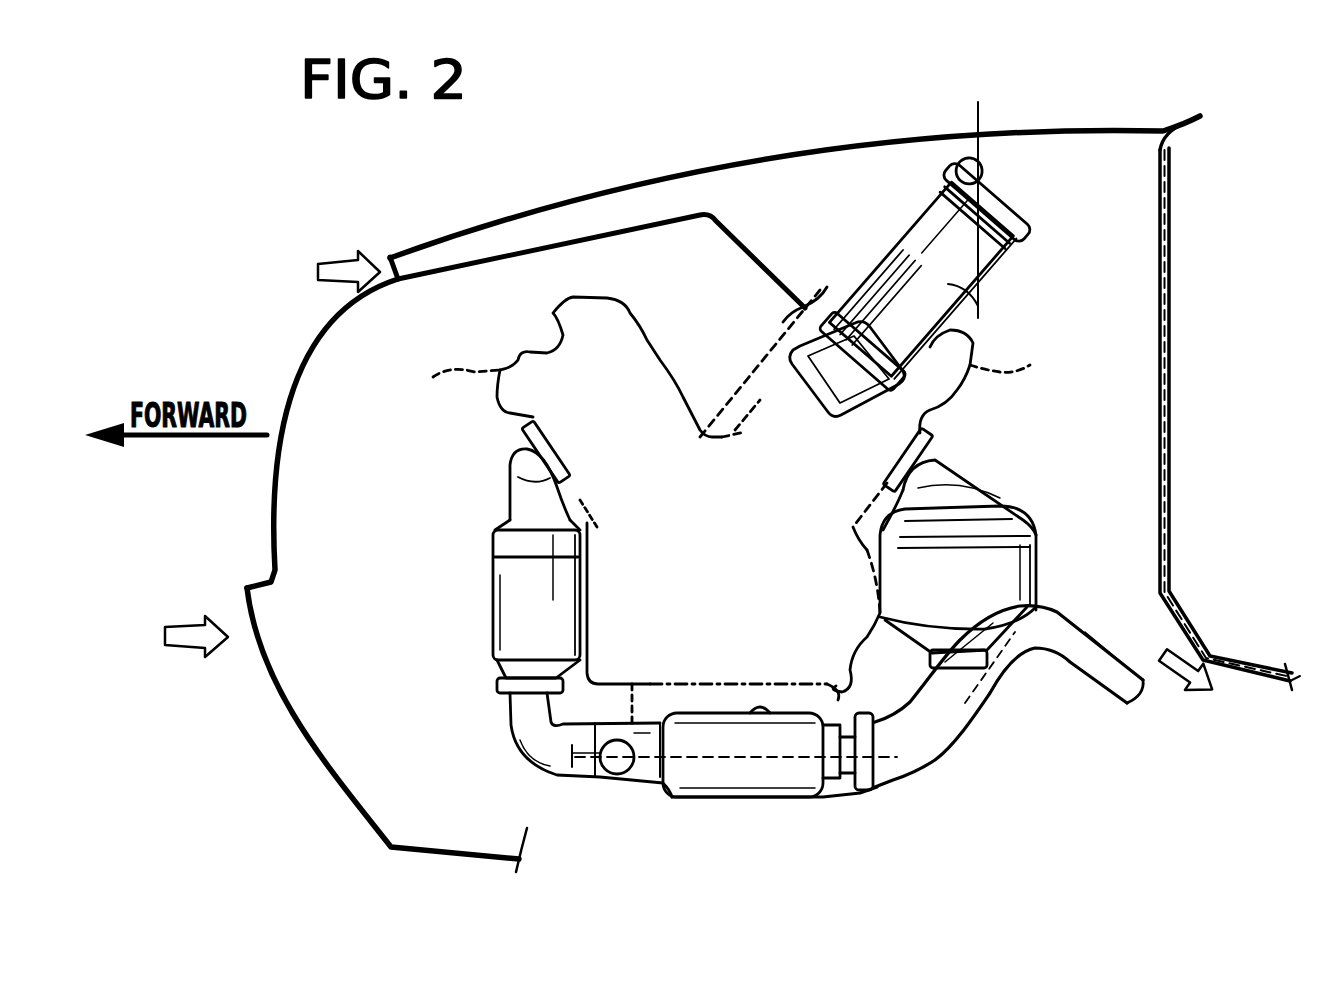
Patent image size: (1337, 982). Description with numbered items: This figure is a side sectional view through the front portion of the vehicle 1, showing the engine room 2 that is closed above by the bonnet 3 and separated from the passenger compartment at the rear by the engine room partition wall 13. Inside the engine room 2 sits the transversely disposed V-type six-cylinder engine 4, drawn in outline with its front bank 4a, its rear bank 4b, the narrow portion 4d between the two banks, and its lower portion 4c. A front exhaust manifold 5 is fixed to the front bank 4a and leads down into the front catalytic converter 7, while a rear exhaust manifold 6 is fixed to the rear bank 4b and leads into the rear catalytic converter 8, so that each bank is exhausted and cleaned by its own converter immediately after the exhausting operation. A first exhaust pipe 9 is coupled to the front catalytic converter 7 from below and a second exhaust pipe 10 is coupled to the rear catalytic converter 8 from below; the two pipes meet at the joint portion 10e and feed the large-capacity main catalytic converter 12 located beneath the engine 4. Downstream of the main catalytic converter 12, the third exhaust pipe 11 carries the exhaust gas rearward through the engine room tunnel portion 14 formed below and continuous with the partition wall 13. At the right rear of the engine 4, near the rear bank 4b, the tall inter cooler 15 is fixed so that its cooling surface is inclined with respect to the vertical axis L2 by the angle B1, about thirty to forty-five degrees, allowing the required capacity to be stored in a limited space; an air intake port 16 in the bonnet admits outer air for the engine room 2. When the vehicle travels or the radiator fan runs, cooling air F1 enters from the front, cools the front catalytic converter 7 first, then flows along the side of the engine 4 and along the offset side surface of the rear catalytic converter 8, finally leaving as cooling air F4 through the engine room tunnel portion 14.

The vehicle body 1 is at (311, 349).
The engine room 2 is at (480, 290).
The hood inner panel 3 is at (603, 230).
The V6 engine 4 is at (648, 342).
The front bank 4a is at (462, 359).
The rear bank 4b is at (1016, 355).
The engine lower portion 4c is at (836, 690).
The narrow portion 4d is at (734, 393).
The front exhaust manifold 5 is at (506, 500).
The rear exhaust manifold 6 is at (960, 486).
The front catalytic converter 7 is at (505, 612).
The rear catalytic converter 8 is at (1037, 570).
The first exhaust pipe 9 is at (533, 737).
The second exhaust pipe 10 is at (893, 790).
The joint portion 10e is at (626, 770).
The third exhaust pipe 11 is at (1052, 655).
The main catalytic converter 12 is at (769, 797).
The engine room partition wall 13 is at (1169, 380).
The engine room tunnel portion 14 is at (1265, 683).
The inter cooler 15 is at (902, 241).
The air intake port 16 is at (797, 192).
The axis extending along the vertical plane of the vehicle L2 is at (980, 120).
The angle B1 is at (985, 300).
The cooling air F1 is at (205, 650).
The cooling air F4 is at (1186, 688).